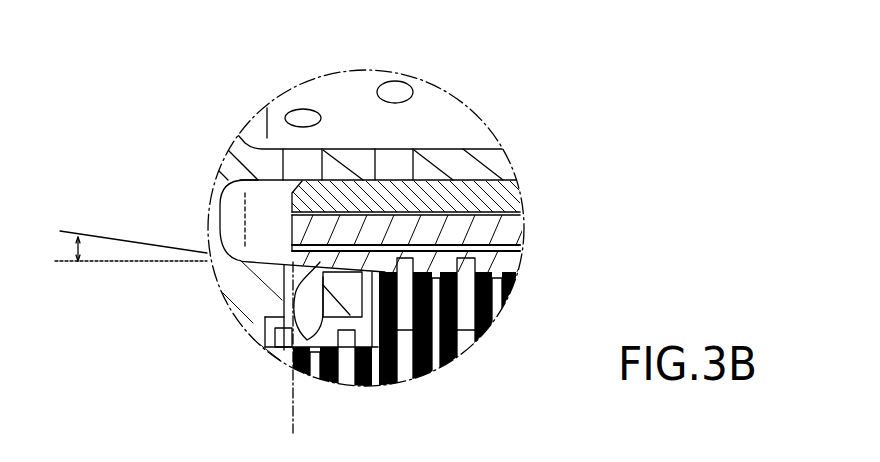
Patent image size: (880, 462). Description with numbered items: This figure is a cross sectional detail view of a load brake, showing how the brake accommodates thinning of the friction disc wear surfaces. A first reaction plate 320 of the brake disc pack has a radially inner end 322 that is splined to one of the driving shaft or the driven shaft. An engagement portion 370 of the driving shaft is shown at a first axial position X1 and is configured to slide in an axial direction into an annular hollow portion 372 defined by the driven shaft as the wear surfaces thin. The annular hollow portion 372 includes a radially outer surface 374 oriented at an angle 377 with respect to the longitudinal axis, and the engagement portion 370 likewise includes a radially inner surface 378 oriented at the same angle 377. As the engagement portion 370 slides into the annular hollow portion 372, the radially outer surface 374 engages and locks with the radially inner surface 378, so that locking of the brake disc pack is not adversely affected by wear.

The first reaction plate 320 is at (420, 366).
The radially inner end 322 is at (405, 267).
The engagement portion 370 is at (352, 258).
The annular hollow portion 372 is at (268, 212).
The radially outer surface 374 is at (258, 262).
The angle 377 is at (77, 247).
The radially inner surface 378 is at (294, 303).
The first axial position X1 is at (292, 418).